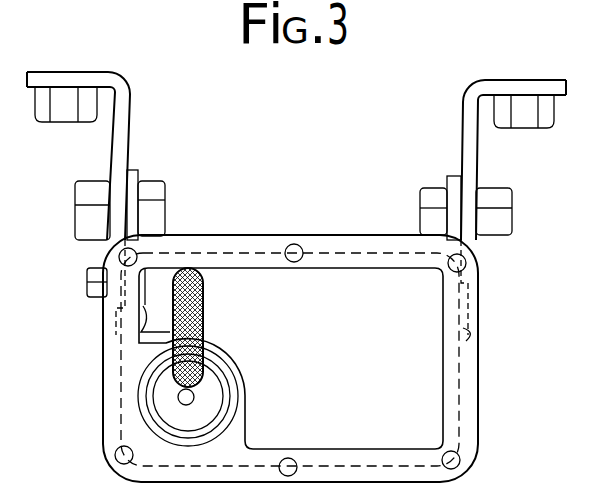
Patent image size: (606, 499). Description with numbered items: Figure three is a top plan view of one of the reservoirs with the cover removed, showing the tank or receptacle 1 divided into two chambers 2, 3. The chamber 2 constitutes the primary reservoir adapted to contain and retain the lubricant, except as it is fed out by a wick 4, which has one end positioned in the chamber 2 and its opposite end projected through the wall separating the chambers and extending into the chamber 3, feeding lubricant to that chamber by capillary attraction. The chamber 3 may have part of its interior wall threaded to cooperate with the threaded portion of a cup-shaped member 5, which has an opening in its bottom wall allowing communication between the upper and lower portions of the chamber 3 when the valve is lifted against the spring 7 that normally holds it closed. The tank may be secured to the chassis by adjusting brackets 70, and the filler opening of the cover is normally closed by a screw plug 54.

The tank 1 is at (143, 327).
The chamber 2 is at (350, 282).
The chamber 3 is at (212, 393).
The wick 4 is at (195, 298).
The cup-shaped member 5 is at (168, 408).
The spring 7 is at (185, 405).
The adjusting brackets 70 is at (118, 188).
The screw plug 54 is at (457, 491).